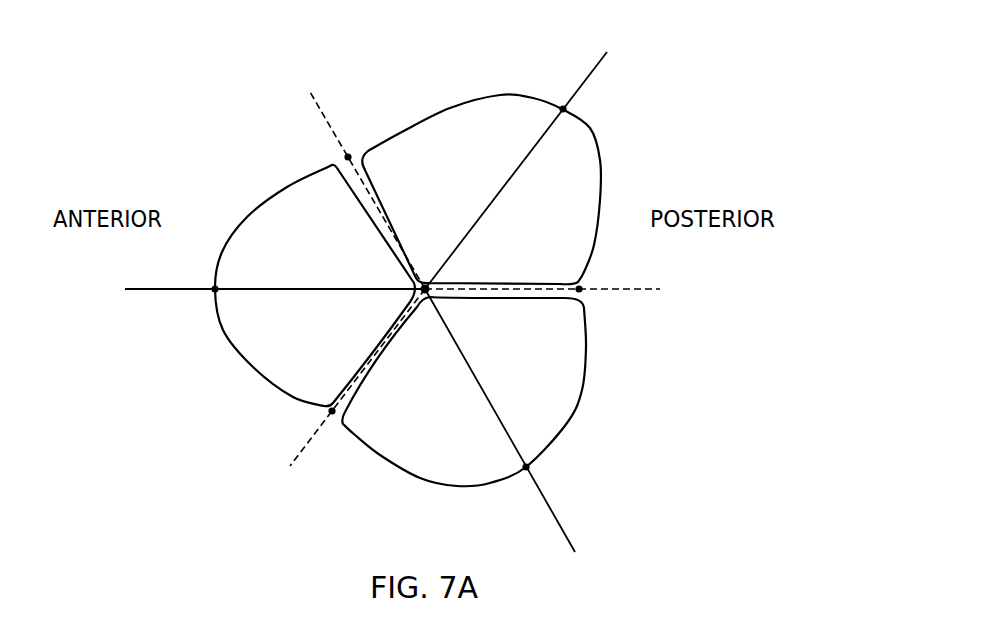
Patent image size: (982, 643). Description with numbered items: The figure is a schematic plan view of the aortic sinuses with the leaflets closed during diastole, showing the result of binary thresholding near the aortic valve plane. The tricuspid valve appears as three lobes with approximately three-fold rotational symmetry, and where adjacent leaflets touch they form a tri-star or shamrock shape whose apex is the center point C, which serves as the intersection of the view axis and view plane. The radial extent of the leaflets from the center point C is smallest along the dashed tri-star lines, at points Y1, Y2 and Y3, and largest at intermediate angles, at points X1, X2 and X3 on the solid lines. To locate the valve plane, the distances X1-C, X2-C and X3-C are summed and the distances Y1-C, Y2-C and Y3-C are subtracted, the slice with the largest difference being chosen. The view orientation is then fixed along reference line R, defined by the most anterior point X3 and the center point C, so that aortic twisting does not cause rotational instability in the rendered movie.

The reference line R is at (160, 290).
The center point C is at (406, 276).
The first maximum radial extent point X1 is at (584, 109).
The second maximum radial extent point X2 is at (546, 477).
The third maximum radial extent point X3 is at (201, 275).
The first minimum radial extent point Y1 is at (542, 278).
The second minimum radial extent point Y2 is at (357, 379).
The third minimum radial extent point Y3 is at (367, 190).